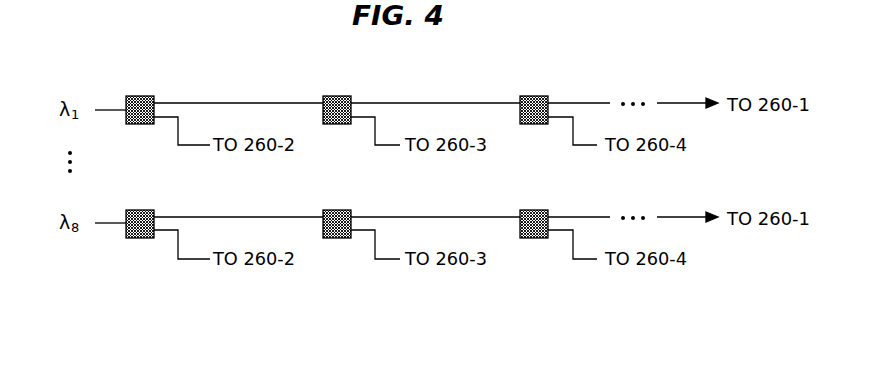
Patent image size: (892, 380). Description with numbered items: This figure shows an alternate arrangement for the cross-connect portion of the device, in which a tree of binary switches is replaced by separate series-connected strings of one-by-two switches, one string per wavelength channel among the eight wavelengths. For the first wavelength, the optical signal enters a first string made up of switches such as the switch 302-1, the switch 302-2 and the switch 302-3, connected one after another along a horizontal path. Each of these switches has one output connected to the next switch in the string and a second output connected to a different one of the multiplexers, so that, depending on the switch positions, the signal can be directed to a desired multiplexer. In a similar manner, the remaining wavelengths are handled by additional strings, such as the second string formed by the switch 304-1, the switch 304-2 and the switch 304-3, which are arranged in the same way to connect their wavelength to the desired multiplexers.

The 1×2 switch 302-1 is at (143, 96).
The 1×2 switch 302-2 is at (340, 96).
The 1×2 switch 302-3 is at (537, 96).
The 1×2 switch 304-1 is at (143, 210).
The 1×2 switch 304-2 is at (340, 210).
The 1×2 switch 304-3 is at (537, 210).